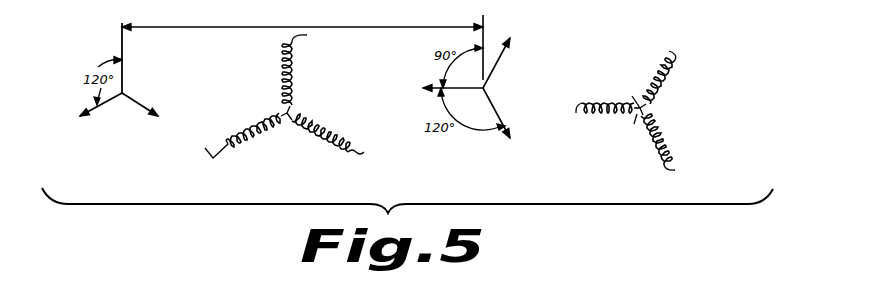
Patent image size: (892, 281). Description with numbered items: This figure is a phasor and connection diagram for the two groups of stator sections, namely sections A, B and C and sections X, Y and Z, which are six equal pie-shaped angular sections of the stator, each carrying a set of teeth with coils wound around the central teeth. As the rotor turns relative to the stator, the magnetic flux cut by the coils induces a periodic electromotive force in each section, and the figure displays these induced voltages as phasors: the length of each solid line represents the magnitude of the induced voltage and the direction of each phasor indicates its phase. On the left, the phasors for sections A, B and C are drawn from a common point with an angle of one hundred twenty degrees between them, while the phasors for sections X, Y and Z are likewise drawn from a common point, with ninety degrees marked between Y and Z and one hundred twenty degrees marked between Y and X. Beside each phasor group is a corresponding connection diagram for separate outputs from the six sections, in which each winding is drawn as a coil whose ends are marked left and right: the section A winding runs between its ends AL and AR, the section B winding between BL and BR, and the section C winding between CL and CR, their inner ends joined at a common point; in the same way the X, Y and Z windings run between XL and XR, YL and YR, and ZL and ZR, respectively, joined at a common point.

The stator section A is at (91, 101).
The stator section B is at (130, 58).
The stator section C is at (142, 101).
The left end of section A winding AL is at (253, 118).
The right end of section A winding AR is at (203, 148).
The left end of section B winding BL is at (309, 74).
The right end of section B winding BR is at (311, 42).
The left end of section C winding CL is at (321, 129).
The right end of section C winding CR is at (365, 153).
The stator section X is at (503, 122).
The stator section Y is at (442, 90).
The stator section Z is at (505, 55).
The left end of section X winding XL is at (662, 134).
The right end of section X winding XR is at (684, 170).
The left end of section Y winding YL is at (608, 122).
The right end of section Y winding YR is at (568, 122).
The left end of section Z winding ZL is at (640, 81).
The right end of section Z winding ZR is at (661, 44).